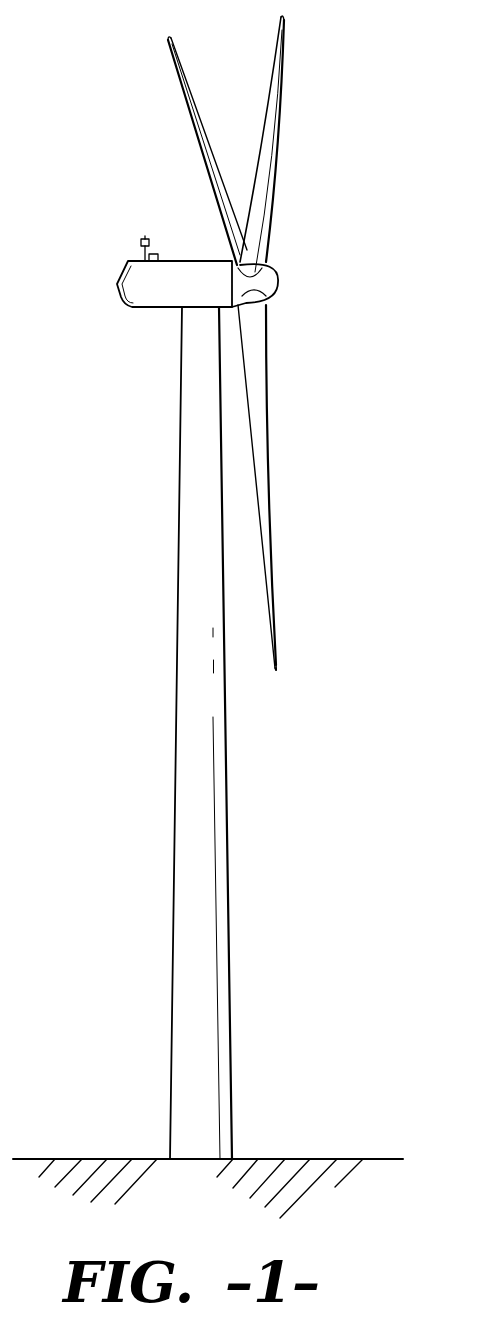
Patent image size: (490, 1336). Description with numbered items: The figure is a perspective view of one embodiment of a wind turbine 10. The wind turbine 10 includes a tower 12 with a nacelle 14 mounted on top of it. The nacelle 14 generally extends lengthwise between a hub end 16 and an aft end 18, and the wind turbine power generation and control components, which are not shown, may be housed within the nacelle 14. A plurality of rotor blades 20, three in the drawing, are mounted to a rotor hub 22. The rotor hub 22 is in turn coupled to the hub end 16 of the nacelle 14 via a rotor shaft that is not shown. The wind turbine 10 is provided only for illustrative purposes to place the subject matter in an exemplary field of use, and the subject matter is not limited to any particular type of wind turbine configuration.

The wind turbine 10 is at (239, 617).
The tower 12 is at (187, 852).
The nacelle 14 is at (155, 314).
The hub end 16 is at (231, 343).
The aft end 18 is at (118, 282).
The rotor blades 20 is at (188, 102).
The rotor hub 22 is at (277, 287).